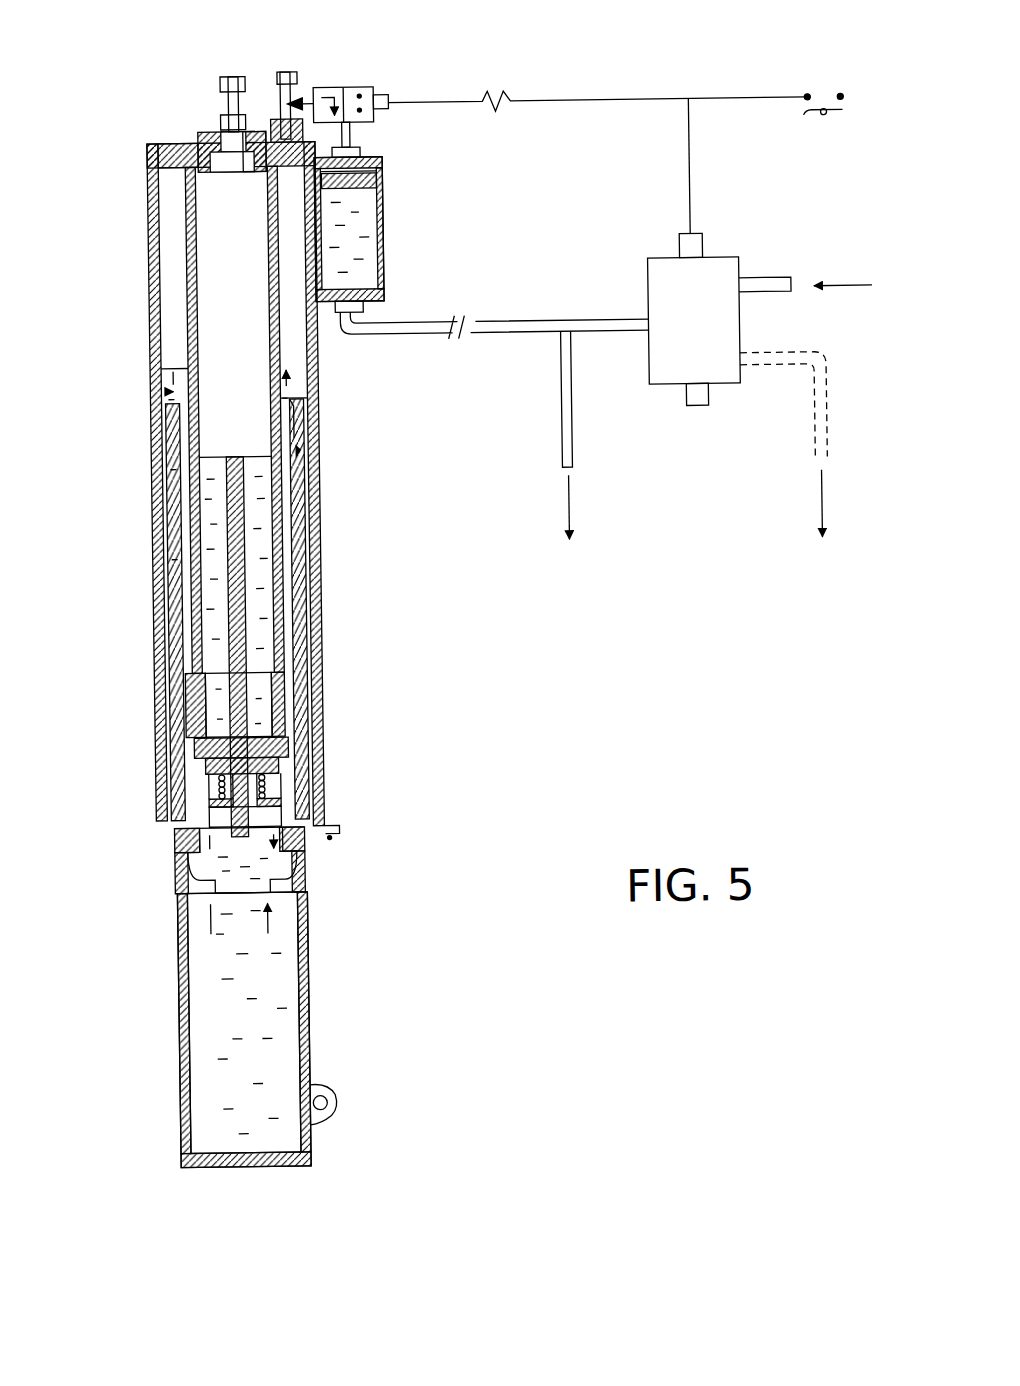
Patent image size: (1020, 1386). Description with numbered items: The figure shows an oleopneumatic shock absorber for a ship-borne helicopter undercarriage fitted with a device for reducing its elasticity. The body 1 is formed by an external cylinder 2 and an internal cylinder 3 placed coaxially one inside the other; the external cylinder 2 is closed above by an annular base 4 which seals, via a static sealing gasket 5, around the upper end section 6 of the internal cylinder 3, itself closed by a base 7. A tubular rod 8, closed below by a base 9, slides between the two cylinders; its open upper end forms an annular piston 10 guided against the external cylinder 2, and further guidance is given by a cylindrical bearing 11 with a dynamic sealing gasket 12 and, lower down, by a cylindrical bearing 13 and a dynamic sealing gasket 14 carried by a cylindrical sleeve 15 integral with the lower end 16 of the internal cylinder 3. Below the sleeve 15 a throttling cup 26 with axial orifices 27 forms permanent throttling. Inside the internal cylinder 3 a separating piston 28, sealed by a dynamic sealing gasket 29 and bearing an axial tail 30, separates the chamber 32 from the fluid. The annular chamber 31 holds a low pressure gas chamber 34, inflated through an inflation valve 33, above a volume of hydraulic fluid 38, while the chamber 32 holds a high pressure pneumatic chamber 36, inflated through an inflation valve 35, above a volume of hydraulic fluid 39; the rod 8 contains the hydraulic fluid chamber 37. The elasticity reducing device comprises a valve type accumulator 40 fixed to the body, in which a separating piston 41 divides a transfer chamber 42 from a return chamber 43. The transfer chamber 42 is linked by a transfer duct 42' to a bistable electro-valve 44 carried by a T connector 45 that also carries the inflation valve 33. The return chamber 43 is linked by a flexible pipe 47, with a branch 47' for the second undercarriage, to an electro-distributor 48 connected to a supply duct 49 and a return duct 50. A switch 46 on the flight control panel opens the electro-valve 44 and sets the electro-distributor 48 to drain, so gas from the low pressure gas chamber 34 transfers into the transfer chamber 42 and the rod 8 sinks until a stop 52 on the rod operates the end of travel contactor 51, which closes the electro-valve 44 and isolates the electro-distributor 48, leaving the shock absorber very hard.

The body 1 is at (138, 308).
The external cylinder 2 is at (152, 262).
The internal cylinder 3 is at (190, 338).
The annular base 4 is at (160, 145).
The static sealing gasket 5 is at (182, 145).
The upper end section of smallest cross-section 6 is at (212, 133).
The base 7 is at (262, 130).
The rod 8 is at (297, 1002).
The base 9 is at (240, 1170).
The annular piston 10 is at (300, 430).
The cylindrical bearing 11 is at (297, 454).
The dynamic sealing gasket 12 is at (297, 472).
The cylindrical bearing 13 is at (175, 842).
The dynamic sealing gasket 14 is at (200, 803).
The cylindrical sleeve 15 is at (288, 858).
The lower end 16 is at (282, 752).
The throttling cup 26 is at (205, 886).
The axial orifices 27 is at (288, 898).
The separating piston 28 is at (205, 772).
The dynamic sealing gasket 29 is at (198, 732).
The axial tail 30 is at (240, 528).
The annular chamber 31 is at (176, 218).
The chamber 32 is at (212, 543).
The inflation valve 33 is at (284, 78).
The low pressure gas chamber 34 is at (282, 332).
The inflation valve 35 is at (229, 82).
The high pressure pneumatic chamber 36 is at (170, 374).
The hydraulic fluid chamber 37 is at (205, 1012).
The volume of hydraulic fluid 38 is at (170, 522).
The volume of hydraulic fluid 39 is at (258, 576).
The valve type accumulator 40 is at (390, 236).
The separating piston 41 is at (358, 186).
The transfer chamber 42 is at (375, 167).
The transfer duct 42' is at (388, 136).
The return chamber 43 is at (346, 264).
The electro-valve 44 is at (345, 90).
The T connector 45 is at (296, 104).
The switch 46 is at (810, 125).
The flexible pipe 47 is at (492, 297).
The branch 47' is at (536, 435).
The electro-distributor 48 is at (644, 280).
The supply duct 49 is at (765, 286).
The return duct 50 is at (824, 396).
The end of travel contactor 51 is at (326, 838).
The stop 52 is at (314, 1094).